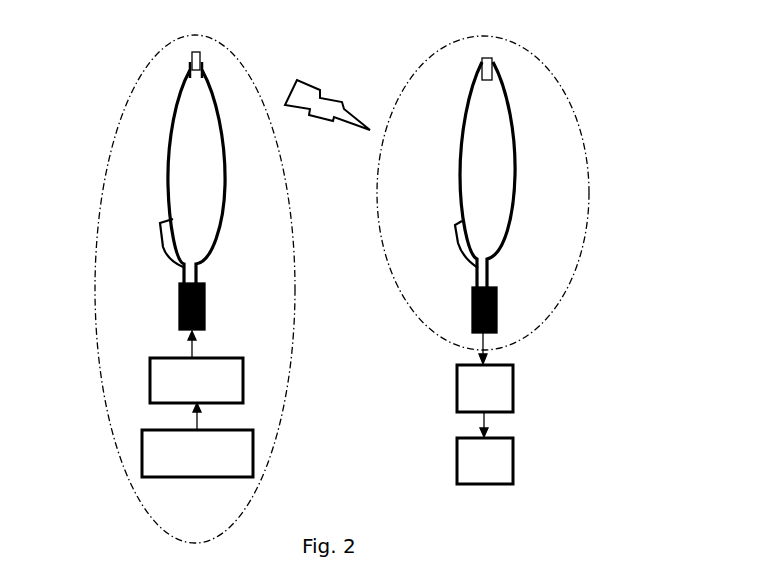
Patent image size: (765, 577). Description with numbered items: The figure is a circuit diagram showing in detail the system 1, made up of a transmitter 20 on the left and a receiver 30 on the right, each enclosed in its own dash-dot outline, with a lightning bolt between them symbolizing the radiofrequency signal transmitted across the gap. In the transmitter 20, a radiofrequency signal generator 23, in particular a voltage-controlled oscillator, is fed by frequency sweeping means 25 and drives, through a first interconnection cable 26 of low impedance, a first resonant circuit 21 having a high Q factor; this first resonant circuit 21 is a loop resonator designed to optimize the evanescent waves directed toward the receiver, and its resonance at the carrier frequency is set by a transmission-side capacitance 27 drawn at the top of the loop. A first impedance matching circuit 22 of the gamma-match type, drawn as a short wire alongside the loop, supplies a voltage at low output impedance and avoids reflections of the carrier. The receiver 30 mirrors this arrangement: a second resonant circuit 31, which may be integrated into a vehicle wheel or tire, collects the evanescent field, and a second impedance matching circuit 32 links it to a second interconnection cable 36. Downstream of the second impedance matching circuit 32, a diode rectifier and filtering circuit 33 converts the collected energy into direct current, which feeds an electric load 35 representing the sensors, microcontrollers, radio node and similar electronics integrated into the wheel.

The system 1 is at (642, 83).
The transmitter 20 is at (98, 200).
The first resonant circuit 21 is at (172, 118).
The first impedance matching circuit 22 is at (165, 243).
The radiofrequency signal generator 23 is at (150, 383).
The frequency sweeping means 25 is at (142, 452).
The first interconnection cable 26 is at (180, 310).
The transmission-side capacitance 27 is at (192, 70).
The receiver 30 is at (590, 203).
The second resonant circuit 31 is at (515, 167).
The second impedance matching circuit 32 is at (455, 242).
The diode rectifier and filtering circuit 33 is at (513, 390).
The electric load 35 is at (513, 466).
The second interconnection cable 36 is at (497, 312).